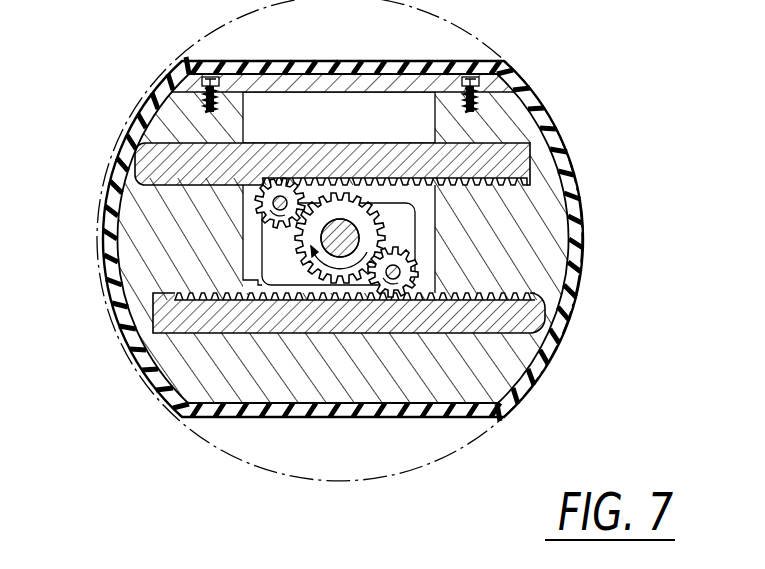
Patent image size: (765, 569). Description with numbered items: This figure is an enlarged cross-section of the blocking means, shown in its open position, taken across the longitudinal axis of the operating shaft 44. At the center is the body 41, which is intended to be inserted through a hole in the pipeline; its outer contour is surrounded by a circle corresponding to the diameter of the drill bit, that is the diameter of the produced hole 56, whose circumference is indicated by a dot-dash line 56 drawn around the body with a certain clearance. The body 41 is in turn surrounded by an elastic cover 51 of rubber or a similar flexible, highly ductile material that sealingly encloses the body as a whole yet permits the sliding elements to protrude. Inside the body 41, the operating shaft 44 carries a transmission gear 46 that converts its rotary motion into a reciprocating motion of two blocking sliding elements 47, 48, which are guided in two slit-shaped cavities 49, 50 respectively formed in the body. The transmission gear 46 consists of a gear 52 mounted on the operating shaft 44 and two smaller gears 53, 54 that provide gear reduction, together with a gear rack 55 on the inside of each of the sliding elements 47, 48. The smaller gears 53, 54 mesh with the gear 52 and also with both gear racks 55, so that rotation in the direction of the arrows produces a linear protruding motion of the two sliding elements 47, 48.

The body 41 is at (137, 383).
The operating shaft 44 is at (358, 227).
The transmission gear 46 is at (433, 239).
The blocking sliding element 47 is at (440, 160).
The blocking sliding element 48 is at (487, 322).
The slit-shaped cavity 49 is at (130, 177).
The slit-shaped cavity 50 is at (553, 305).
The elastic cover 51 is at (120, 346).
The gear 52 is at (297, 238).
The smaller gear 53 is at (130, 193).
The smaller gear 54 is at (420, 265).
The gear rack 55 is at (216, 292).
The produced hole 56 is at (215, 442).